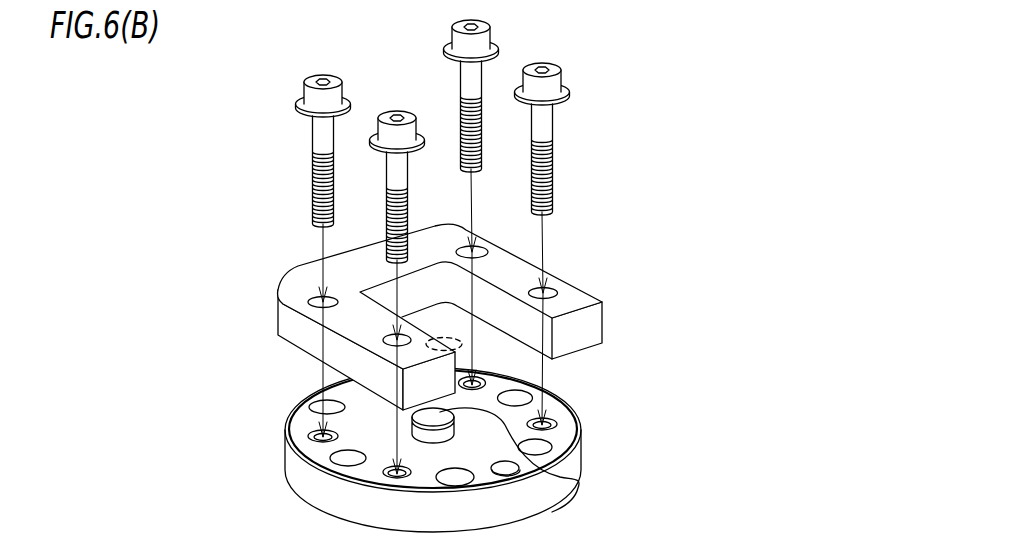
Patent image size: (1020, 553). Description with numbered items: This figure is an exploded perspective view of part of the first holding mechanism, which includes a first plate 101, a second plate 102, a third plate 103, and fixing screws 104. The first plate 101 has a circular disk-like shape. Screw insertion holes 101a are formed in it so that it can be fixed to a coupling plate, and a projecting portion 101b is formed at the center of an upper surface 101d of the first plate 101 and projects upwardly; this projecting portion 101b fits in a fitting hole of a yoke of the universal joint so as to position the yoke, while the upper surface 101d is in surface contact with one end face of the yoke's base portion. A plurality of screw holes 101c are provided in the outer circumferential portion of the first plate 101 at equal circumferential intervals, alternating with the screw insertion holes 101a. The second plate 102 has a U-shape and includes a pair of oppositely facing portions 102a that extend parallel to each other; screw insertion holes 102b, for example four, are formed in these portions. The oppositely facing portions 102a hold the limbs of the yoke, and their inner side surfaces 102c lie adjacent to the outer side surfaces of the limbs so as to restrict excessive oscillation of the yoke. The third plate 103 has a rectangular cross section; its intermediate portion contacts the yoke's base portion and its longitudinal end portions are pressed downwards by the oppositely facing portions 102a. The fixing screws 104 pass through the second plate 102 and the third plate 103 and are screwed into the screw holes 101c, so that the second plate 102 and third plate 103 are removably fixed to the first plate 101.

The first plate 101 is at (573, 467).
The screw insertion holes 101a is at (538, 447).
The projecting portion 101b is at (518, 472).
The screw holes 101c is at (553, 417).
The upper surface 101d is at (375, 435).
The second plate 102 is at (570, 295).
The oppositely facing portions 102a is at (507, 268).
The screw insertion holes 102b is at (470, 248).
The inner side surfaces 102c is at (425, 352).
The third plate 103 is at (458, 373).
The fixing screws 104 is at (390, 140).